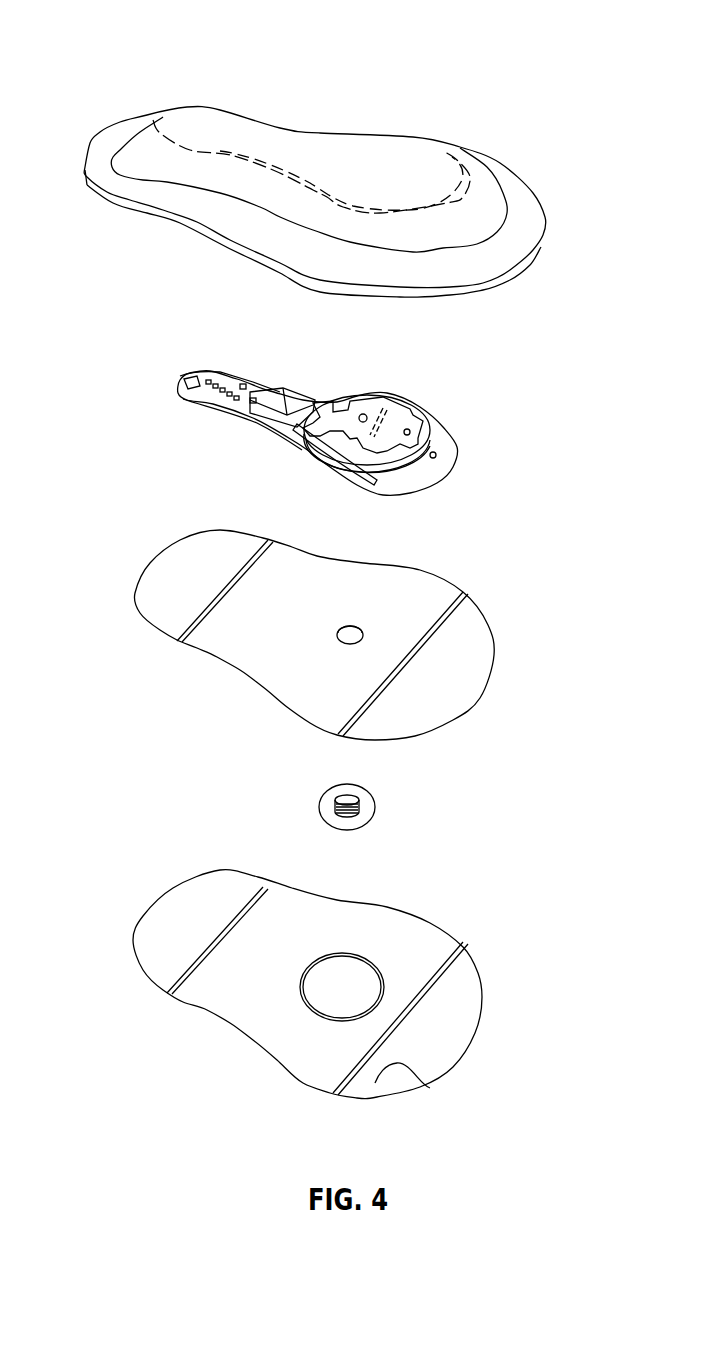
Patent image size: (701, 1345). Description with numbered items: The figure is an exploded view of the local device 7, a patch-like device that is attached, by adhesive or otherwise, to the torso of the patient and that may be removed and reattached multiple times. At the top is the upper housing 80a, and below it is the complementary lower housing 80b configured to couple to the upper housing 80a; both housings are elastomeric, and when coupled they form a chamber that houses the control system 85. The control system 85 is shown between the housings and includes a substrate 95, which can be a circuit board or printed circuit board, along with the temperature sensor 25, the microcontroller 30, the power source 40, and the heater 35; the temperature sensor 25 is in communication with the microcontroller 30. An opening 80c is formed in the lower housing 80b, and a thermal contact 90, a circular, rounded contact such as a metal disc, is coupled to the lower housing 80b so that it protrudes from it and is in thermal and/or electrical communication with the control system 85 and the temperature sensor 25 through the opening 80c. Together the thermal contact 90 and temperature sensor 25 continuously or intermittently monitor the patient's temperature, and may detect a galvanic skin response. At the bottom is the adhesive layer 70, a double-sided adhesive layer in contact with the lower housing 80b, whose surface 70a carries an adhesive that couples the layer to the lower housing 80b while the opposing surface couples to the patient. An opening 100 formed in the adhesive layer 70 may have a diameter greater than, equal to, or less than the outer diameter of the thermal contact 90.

The local device 7 is at (105, 43).
The temperature sensor 25 is at (280, 397).
The microcontroller 30 is at (177, 388).
The heater 35 is at (303, 443).
The power source 40 is at (397, 400).
The adhesive layer 70 is at (473, 1037).
The surface 70a is at (430, 1088).
The upper housing 80a is at (540, 243).
The lower housing 80b is at (495, 670).
The opening 80c is at (347, 627).
The control system 85 is at (423, 472).
The thermal contact 90 is at (375, 807).
The substrate 95 is at (437, 420).
The opening 100 is at (355, 972).